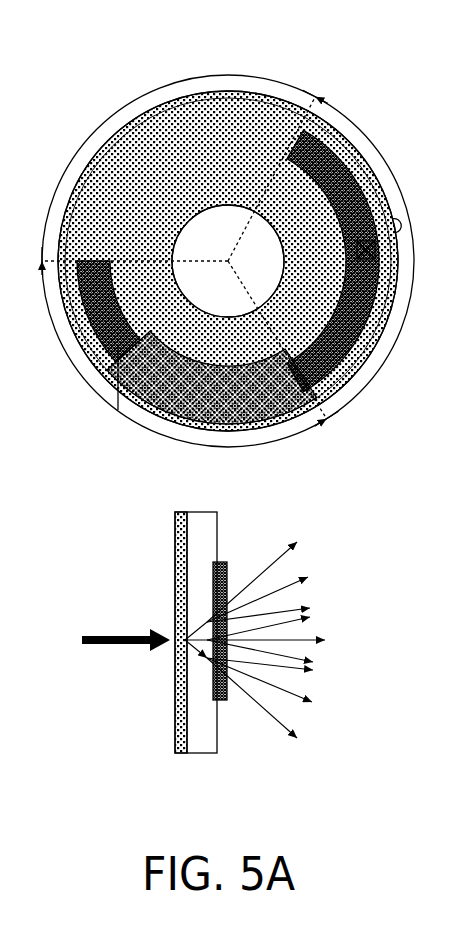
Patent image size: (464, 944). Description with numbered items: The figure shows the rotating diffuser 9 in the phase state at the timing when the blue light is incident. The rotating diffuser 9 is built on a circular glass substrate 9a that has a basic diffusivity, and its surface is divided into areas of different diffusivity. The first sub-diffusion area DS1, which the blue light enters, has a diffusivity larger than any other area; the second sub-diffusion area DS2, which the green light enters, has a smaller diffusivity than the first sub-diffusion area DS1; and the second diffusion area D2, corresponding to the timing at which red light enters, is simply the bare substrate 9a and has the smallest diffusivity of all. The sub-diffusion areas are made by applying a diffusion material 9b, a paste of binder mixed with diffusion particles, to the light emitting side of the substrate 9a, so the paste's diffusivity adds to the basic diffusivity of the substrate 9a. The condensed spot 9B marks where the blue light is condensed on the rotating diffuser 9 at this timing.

The rotating diffuser 9 is at (250, 90).
The substrate 9a is at (117, 412).
The diffusion material 9b is at (324, 432).
The condensed spot of the blue light 9B is at (410, 232).
The second diffusion area D2 is at (190, 250).
The first sub-diffusion area DS1 is at (409, 135).
The second sub-diffusion area DS2 is at (40, 386).